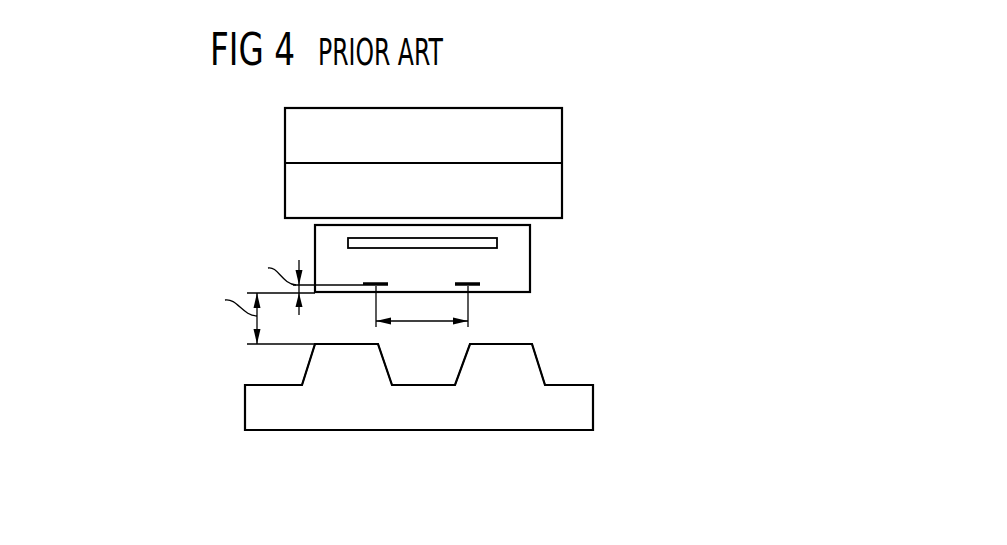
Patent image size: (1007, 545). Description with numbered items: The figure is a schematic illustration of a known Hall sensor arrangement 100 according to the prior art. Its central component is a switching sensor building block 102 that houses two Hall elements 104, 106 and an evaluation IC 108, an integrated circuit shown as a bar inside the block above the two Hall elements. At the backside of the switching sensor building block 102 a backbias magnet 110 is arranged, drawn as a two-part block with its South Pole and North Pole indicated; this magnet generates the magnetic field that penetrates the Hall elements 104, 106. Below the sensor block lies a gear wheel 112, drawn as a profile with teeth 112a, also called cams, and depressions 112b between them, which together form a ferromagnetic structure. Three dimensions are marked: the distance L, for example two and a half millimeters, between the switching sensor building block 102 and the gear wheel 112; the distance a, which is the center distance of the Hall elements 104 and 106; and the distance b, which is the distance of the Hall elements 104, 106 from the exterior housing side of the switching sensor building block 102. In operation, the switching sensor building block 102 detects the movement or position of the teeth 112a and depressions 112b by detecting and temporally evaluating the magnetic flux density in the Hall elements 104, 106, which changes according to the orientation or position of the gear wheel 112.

The Hall sensor arrangement 100 is at (115, 188).
The switching sensor building block 102 is at (530, 280).
The Hall element 104 is at (369, 284).
The Hall element 106 is at (458, 283).
The evaluation IC 108 is at (497, 242).
The backbias magnet 110 is at (586, 144).
The gear wheel 112 is at (587, 415).
The teeth 112a is at (571, 348).
The depressions 112b is at (458, 367).